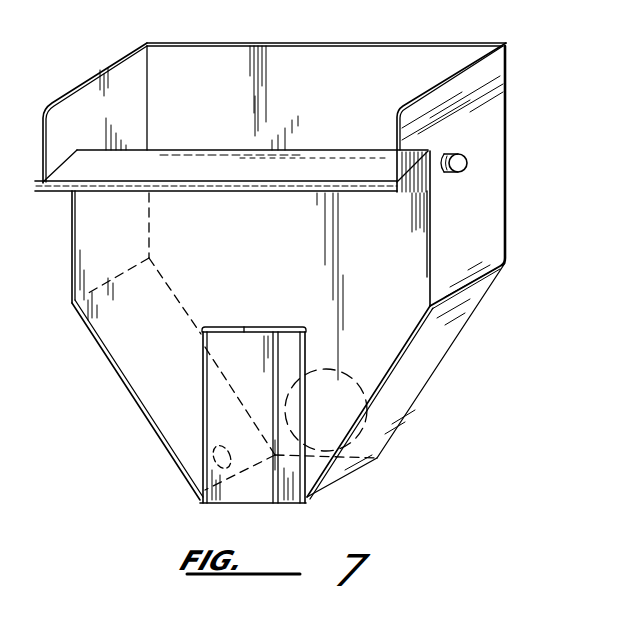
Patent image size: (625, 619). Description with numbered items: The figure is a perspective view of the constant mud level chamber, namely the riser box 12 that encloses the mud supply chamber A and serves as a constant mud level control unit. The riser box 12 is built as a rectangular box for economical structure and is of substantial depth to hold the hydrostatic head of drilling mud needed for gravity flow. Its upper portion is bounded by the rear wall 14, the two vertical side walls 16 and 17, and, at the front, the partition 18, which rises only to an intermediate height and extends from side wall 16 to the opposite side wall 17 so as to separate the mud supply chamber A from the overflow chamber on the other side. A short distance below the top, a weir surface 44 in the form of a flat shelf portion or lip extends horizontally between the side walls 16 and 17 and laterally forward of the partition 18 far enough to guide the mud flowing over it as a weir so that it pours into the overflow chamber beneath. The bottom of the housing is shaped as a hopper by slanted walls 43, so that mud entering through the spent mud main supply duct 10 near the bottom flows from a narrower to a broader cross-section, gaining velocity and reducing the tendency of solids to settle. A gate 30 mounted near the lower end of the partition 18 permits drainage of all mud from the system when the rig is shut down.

The spent mud main supply duct 10 is at (343, 378).
The riser box 12 is at (511, 104).
The rear wall 14 is at (438, 60).
The side wall 16 is at (117, 116).
The side wall 17 is at (481, 233).
The partition 18 is at (293, 259).
The gate 30 is at (296, 350).
The slanted walls 43 is at (127, 387).
The weir surface 44 is at (222, 162).
The mud supply chamber A is at (330, 107).